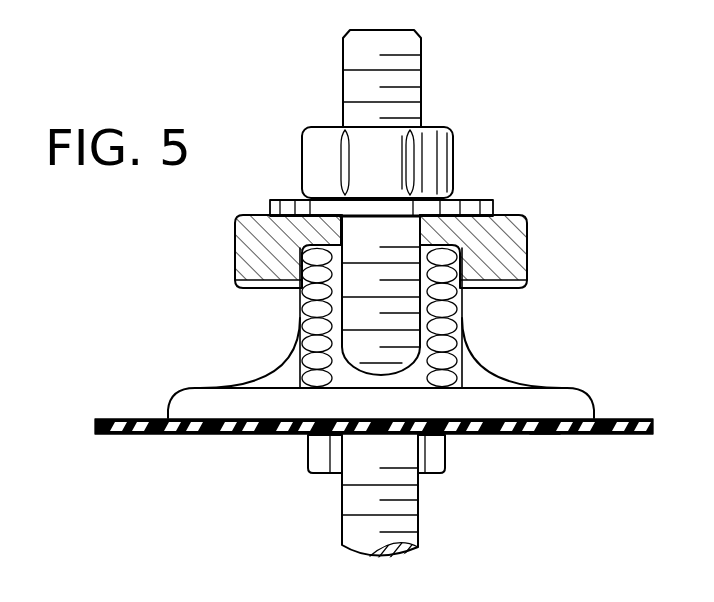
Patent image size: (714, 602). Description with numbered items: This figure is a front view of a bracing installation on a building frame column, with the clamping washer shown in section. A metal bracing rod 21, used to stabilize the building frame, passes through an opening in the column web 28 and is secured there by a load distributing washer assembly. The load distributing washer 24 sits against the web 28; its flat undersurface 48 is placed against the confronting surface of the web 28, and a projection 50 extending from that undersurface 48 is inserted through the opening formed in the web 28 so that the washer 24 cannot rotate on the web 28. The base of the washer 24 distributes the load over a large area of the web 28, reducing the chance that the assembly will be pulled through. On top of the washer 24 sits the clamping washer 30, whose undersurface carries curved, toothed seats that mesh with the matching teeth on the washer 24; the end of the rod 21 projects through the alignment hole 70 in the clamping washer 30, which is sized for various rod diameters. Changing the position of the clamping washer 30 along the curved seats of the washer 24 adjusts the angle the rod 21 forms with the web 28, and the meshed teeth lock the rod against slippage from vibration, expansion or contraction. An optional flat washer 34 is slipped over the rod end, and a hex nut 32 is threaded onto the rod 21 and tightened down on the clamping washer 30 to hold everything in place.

The bracing rod 21 is at (425, 57).
The hex nut 32 is at (454, 132).
The flat washer 34 is at (491, 204).
The alignment hole 70 is at (410, 238).
The clamping washer 30 is at (528, 260).
The load distributing washer 24 is at (577, 397).
The web 28 is at (645, 419).
The flat undersurface 48 is at (546, 434).
The projection 50 is at (446, 460).